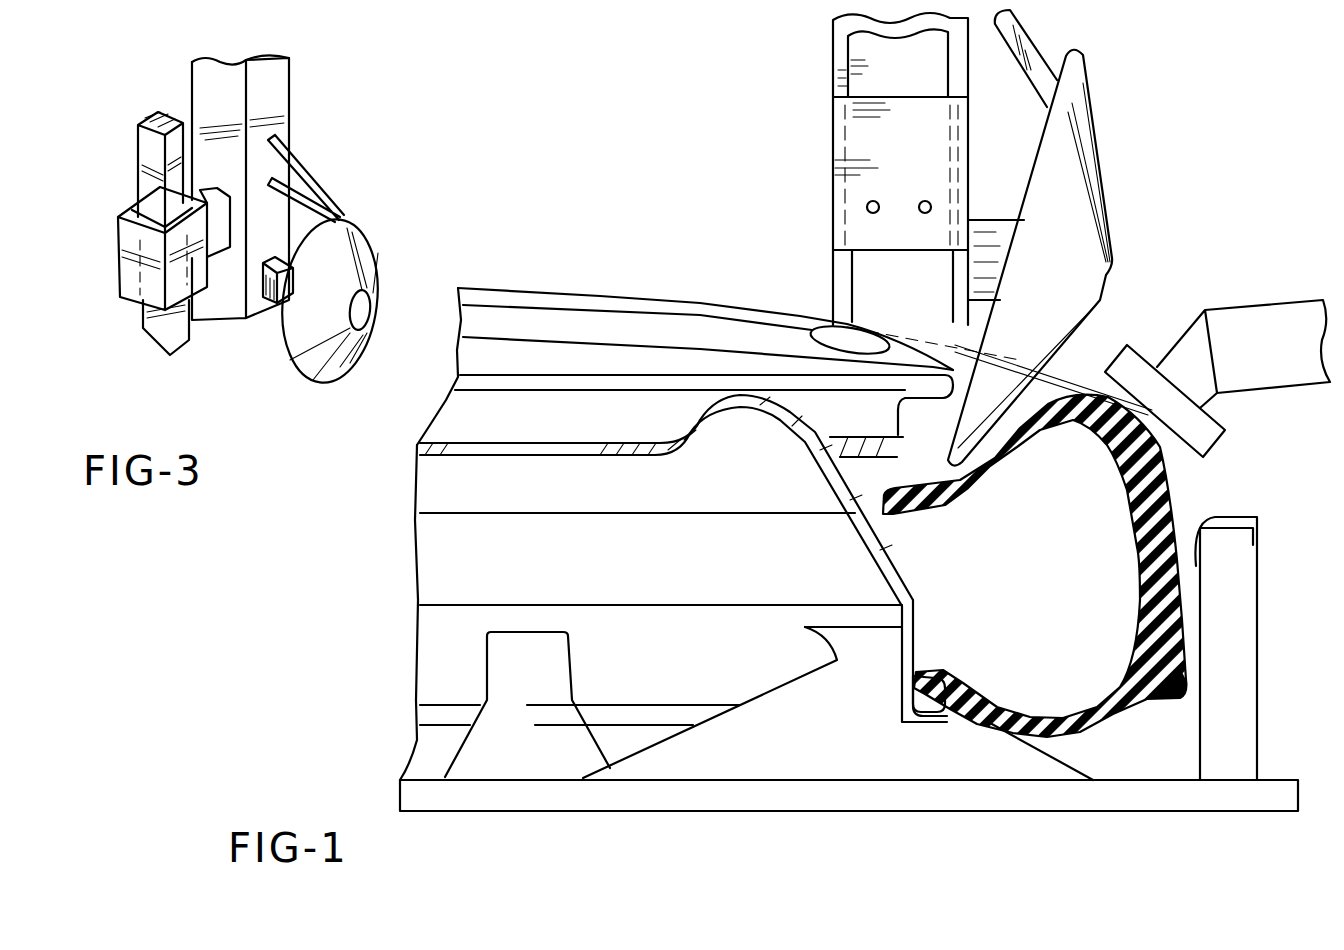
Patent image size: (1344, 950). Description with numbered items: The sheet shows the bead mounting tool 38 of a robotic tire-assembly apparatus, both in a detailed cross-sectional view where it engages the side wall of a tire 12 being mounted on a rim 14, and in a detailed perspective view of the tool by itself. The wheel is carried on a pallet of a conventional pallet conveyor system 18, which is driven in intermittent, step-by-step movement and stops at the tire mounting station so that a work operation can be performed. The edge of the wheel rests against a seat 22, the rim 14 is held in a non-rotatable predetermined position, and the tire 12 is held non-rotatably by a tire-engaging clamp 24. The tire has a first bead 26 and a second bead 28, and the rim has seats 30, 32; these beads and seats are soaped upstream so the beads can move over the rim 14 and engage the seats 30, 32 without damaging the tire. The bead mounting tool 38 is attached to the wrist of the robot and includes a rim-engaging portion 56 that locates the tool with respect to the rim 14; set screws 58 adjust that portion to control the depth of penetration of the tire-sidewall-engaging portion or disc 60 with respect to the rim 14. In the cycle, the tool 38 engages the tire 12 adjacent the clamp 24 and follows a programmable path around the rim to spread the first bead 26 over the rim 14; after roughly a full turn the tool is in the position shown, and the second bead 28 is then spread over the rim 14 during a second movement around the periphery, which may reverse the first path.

In FIG. 1, the tire 12 is at (513, 288).
In FIG. 1, the rim 14 is at (553, 377).
In FIG. 1, the pallet conveyor system 18 is at (858, 812).
In FIG. 1, the seat 22 is at (1215, 517).
In FIG. 1, the tire-engaging clamp 24 is at (1180, 450).
In FIG. 1, the first bead 26 is at (913, 680).
In FIG. 1, the second bead 28 is at (670, 327).
In FIG. 1, the seat of the rim 30 is at (925, 673).
In FIG. 1, the seat of the rim 32 is at (823, 440).
In FIG. 1, the bead mounting tool 38 is at (833, 57).
In FIG. 3, the bead mounting tool 38 is at (289, 100).
In FIG. 1, the rim-engaging portion 56 is at (815, 330).
In FIG. 3, the rim-engaging portion 56 is at (159, 347).
In FIG. 1, the set screws 58 is at (870, 206).
In FIG. 1, the tire-sidewall-engaging portion or disc 60 is at (963, 470).
In FIG. 3, the tire-sidewall-engaging portion or disc 60 is at (305, 380).